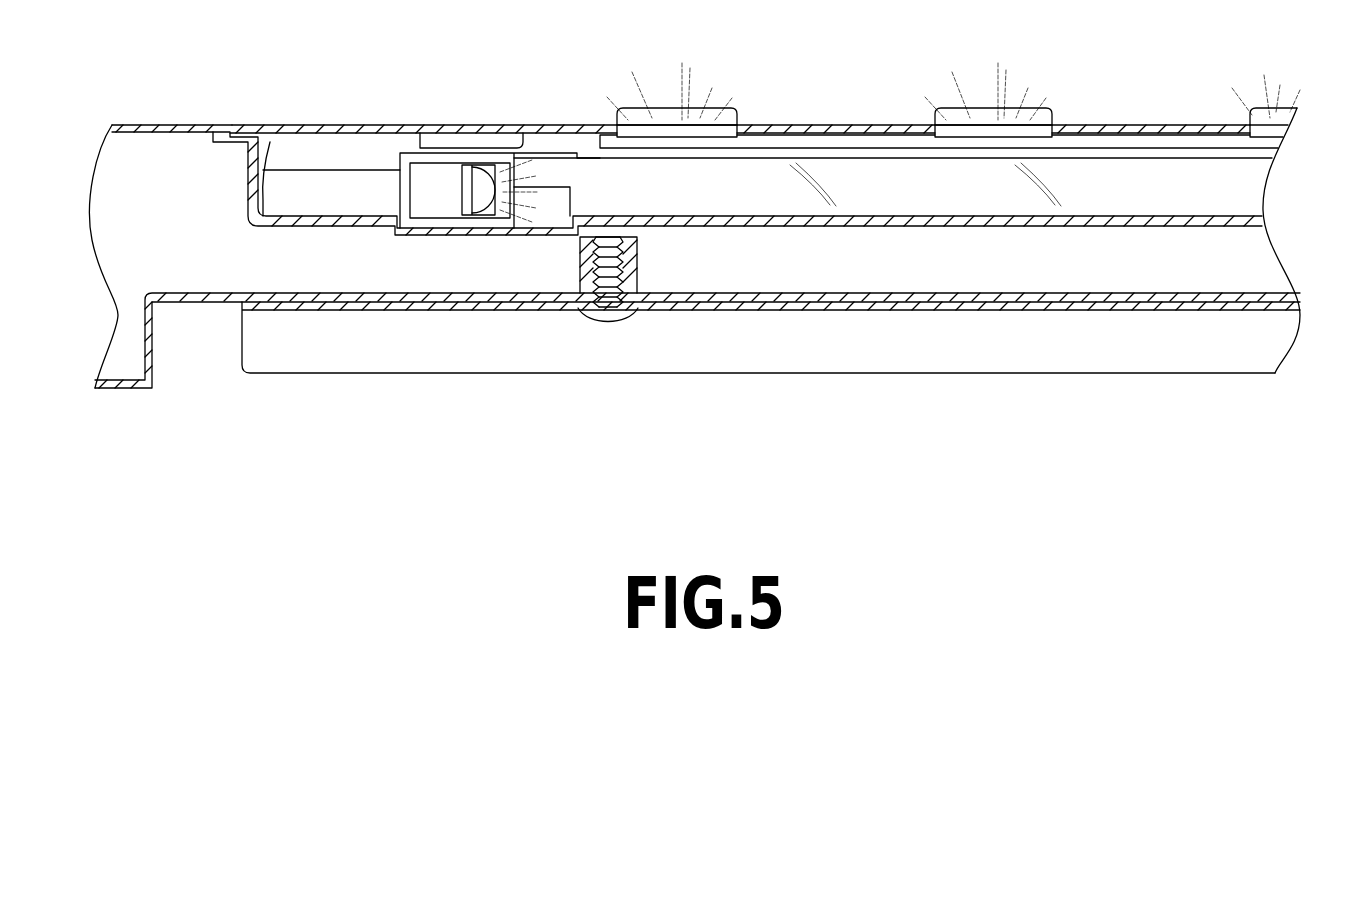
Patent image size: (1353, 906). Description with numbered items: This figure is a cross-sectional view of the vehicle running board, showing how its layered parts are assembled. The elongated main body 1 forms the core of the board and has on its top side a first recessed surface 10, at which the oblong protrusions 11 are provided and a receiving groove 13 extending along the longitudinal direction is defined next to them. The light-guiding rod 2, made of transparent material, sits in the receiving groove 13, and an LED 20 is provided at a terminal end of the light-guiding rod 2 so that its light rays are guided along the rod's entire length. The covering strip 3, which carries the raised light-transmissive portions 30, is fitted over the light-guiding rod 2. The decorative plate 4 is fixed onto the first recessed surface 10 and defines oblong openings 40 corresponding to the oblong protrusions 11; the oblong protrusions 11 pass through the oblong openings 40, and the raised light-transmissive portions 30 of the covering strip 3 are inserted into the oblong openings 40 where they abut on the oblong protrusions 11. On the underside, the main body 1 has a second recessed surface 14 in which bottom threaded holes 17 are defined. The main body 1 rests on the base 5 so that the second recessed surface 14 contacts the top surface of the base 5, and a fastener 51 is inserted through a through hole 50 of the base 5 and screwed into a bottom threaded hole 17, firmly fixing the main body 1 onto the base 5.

The main body 1 is at (155, 122).
The first recessed surface 10 is at (225, 140).
The receiving groove 13 is at (295, 192).
The LED 20 is at (478, 190).
The covering strip 3 is at (610, 146).
The raised light-transmissive portion 30 is at (668, 130).
The oblong protrusion 11 is at (692, 107).
The oblong opening 40 is at (738, 127).
The decorative plate 4 is at (808, 124).
The light-guiding rod 2 is at (867, 185).
The second recessed surface 14 is at (208, 302).
The base 5 is at (875, 375).
The through hole 50 is at (647, 302).
The bottom threaded hole 17 is at (590, 262).
The fastener 51 is at (607, 318).